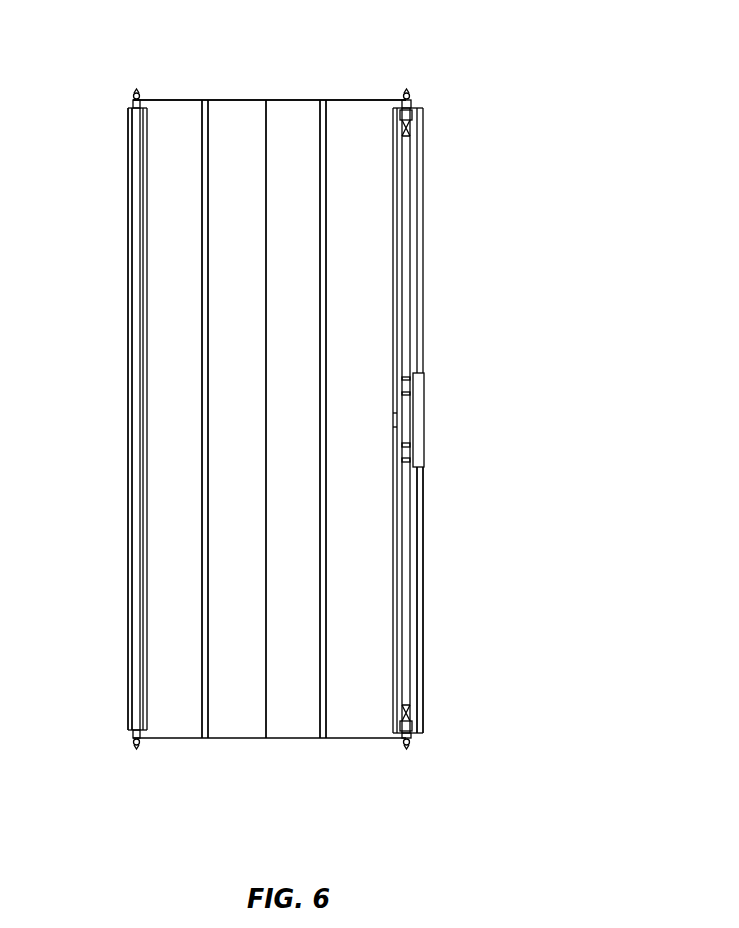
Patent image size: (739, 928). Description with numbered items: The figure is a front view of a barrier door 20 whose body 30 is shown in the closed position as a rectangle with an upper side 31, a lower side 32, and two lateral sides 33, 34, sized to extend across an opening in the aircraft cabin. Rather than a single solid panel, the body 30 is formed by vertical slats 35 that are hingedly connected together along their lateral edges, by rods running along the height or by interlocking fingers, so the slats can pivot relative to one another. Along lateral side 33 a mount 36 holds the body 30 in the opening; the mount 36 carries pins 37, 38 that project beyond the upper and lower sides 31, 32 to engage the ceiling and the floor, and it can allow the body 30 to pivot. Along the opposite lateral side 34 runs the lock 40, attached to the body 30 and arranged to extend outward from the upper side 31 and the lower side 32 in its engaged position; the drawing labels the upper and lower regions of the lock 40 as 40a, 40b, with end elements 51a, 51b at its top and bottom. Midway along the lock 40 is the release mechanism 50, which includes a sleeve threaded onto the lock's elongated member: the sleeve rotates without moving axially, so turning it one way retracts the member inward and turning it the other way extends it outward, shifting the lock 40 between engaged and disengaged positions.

The barrier door 20 is at (520, 155).
The body 30 is at (243, 115).
The upper side 31 is at (290, 100).
The lower side 32 is at (285, 740).
The lateral side 33 is at (129, 453).
The lateral side 34 is at (424, 485).
The vertical slats 35 is at (342, 678).
The mount 36 is at (127, 208).
The pin 37 is at (136, 92).
The pin 38 is at (137, 746).
The lock 40 is at (410, 318).
The upper rail bracket 40a is at (410, 128).
The lower rail bracket 40b is at (410, 715).
The release mechanism 50 is at (424, 415).
The upper hook 51a is at (406, 93).
The lower hook 51b is at (407, 746).